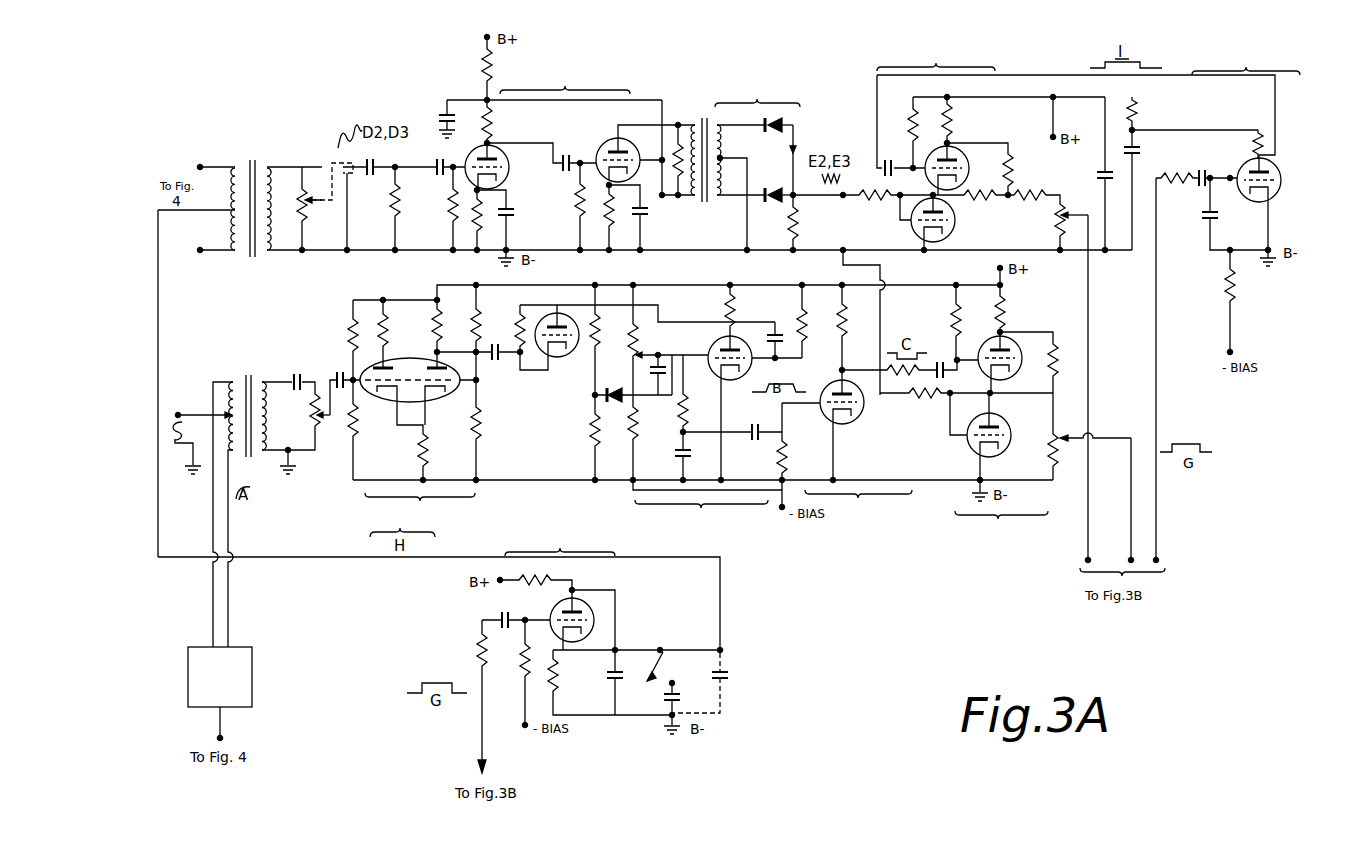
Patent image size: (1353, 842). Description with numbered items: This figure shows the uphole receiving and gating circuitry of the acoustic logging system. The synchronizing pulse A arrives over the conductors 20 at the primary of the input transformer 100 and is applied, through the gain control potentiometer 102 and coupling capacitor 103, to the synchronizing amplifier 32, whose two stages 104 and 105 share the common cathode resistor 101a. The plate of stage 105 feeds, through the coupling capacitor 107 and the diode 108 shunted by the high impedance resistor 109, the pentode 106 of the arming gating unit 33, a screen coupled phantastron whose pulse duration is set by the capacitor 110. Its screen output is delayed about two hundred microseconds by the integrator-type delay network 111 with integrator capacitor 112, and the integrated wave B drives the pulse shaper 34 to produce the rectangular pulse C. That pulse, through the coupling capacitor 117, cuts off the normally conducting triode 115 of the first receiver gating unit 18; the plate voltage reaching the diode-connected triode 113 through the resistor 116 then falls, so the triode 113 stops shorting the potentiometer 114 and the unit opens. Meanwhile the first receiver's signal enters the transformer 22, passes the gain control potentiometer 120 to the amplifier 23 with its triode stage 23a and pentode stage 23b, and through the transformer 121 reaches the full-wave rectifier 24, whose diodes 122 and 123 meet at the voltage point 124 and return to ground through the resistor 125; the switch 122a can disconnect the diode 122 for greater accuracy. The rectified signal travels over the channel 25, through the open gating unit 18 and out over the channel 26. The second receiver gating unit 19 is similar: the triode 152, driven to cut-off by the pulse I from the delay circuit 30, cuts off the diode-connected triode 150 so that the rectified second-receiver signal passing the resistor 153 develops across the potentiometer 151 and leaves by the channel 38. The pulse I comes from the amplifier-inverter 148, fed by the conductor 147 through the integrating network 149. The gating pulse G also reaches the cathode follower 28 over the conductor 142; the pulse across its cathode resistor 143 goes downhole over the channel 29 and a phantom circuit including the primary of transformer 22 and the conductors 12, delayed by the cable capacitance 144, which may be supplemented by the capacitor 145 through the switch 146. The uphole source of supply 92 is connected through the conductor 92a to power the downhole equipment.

The conductors 12 is at (217, 167).
The transformer 22 is at (252, 172).
The gain control potentiometer 120 is at (317, 210).
The two-stage amplifier 23 is at (566, 79).
The triode stage 23a is at (508, 176).
The pentode stage 23b is at (600, 143).
The transformer 121 is at (696, 149).
The full-wave rectifier 24 is at (768, 95).
The diode 122 is at (784, 124).
The switch 122a is at (797, 153).
The diode 123 is at (764, 186).
The voltage point 124 is at (795, 197).
The resistor 125 is at (791, 220).
The channel 25 is at (882, 322).
The resistor 153 is at (877, 201).
The second receiver gating unit 19 is at (972, 57).
The triode 152 is at (951, 147).
The diode-connected triode 150 is at (956, 219).
The potentiometer 151 is at (1061, 222).
The channel 38 is at (1090, 481).
The delay circuit 30 is at (1251, 62).
The amplifier-inverter 148 is at (1280, 172).
The integrating network 149 is at (1193, 213).
The conductor 147 is at (1158, 488).
The channel 26 is at (1115, 436).
The uphole source of supply 92 is at (201, 430).
The input transformer 100 is at (238, 379).
The conductors 20 is at (212, 607).
The gain control potentiometer 102 is at (313, 432).
The coupling capacitor 103 is at (336, 372).
The stage 104 is at (380, 399).
The stage 105 is at (428, 360).
The common cathode resistor 101a is at (420, 448).
The synchronizing amplifier 32 is at (420, 506).
The coupling capacitor 107 is at (498, 364).
The high impedance resistor 109 is at (519, 330).
The diode 108 is at (562, 357).
The capacitor 110 is at (656, 362).
The delay network 111 is at (668, 453).
The integrator capacitor 112 is at (679, 456).
The pentode 106 is at (718, 350).
The arming gating unit 33 is at (701, 528).
The pulse shaper 34 is at (880, 408).
The coupling capacitor 117 is at (959, 375).
The resistor 116 is at (1003, 316).
The triode 115 is at (1014, 364).
The potentiometer 114 is at (1050, 456).
The diode-connected triode 113 is at (1002, 455).
The first receiver gating unit 18 is at (986, 533).
The channel 29 is at (294, 556).
The conductor 92a is at (222, 726).
The cathode follower 28 is at (602, 632).
The cathode resistor 143 is at (610, 682).
The switch 146 is at (656, 683).
The capacitor 145 is at (676, 696).
The capacitor 144 is at (723, 677).
The conductor 142 is at (481, 712).